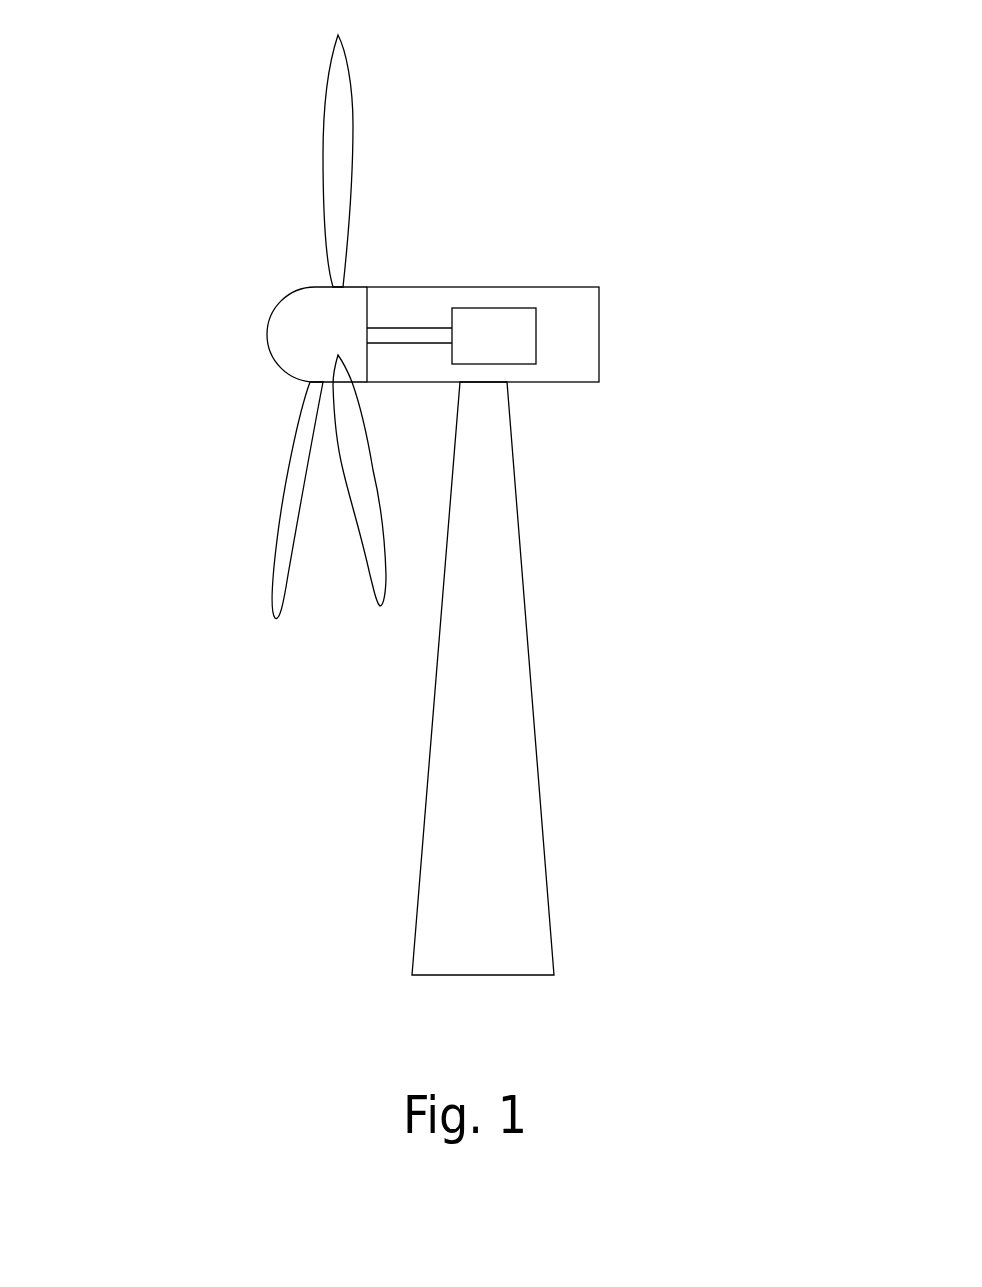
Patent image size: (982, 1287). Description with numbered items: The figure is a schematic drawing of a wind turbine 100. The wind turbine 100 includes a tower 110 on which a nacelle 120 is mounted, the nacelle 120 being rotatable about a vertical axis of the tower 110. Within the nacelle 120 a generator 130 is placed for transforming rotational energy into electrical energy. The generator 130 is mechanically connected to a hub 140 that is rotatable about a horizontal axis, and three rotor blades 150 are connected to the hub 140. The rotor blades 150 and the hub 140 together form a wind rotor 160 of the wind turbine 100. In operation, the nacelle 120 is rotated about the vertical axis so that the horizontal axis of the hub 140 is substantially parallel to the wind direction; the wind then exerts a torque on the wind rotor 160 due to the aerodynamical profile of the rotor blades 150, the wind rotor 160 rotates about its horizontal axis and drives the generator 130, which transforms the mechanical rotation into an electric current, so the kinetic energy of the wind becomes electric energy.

The wind turbine 100 is at (815, 137).
The tower 110 is at (533, 713).
The nacelle 120 is at (599, 320).
The generator 130 is at (495, 323).
The hub 140 is at (343, 313).
The rotor blades 150 is at (325, 160).
The wind rotor 160 is at (269, 326).